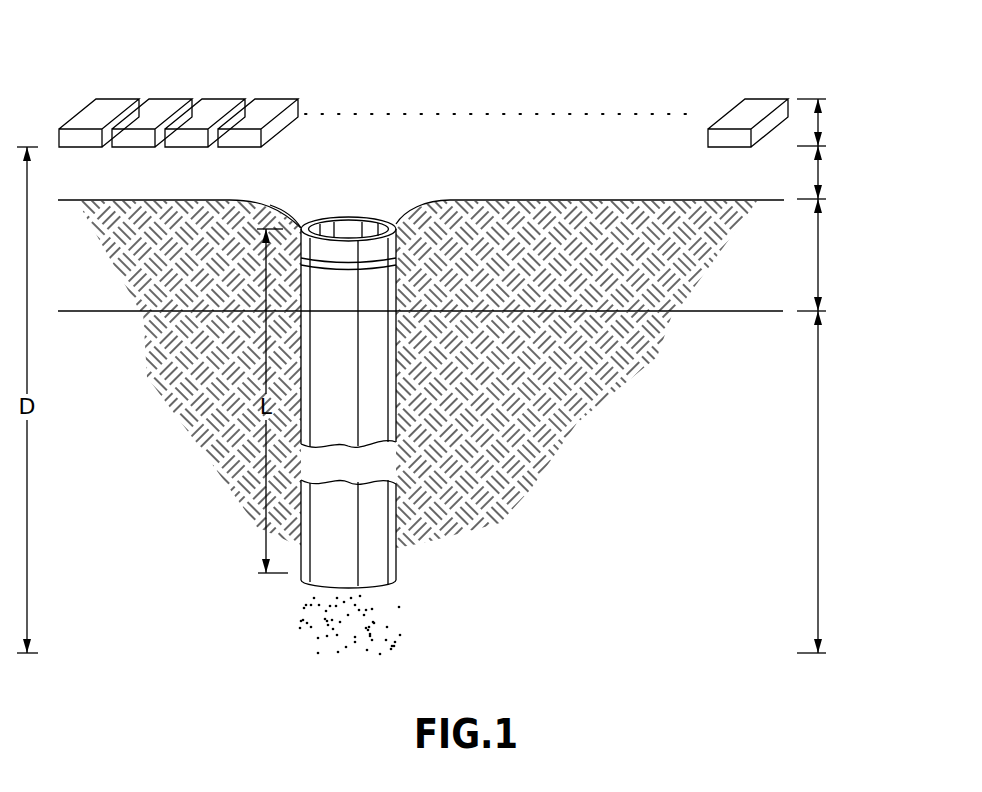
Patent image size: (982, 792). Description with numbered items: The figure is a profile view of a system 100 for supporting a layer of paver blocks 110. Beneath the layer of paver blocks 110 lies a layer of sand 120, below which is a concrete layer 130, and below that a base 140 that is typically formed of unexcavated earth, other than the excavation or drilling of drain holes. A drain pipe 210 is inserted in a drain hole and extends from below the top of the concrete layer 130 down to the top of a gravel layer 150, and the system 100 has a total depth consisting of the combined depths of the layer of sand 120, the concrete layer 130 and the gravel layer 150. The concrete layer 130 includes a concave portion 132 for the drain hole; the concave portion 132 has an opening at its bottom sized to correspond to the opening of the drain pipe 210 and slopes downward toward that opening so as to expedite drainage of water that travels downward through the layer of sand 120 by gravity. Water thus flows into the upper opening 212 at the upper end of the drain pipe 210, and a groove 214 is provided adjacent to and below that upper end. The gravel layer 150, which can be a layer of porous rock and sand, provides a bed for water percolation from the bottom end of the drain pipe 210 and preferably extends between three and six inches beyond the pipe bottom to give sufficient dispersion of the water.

The system for supporting a layer of paver blocks 100 is at (268, 33).
The layer of paver blocks 110 is at (819, 123).
The layer of sand 120 is at (819, 175).
The concrete layer 130 is at (819, 255).
The concave portion 132 is at (300, 224).
The base 140 is at (819, 481).
The gravel layer 150 is at (322, 620).
The drain pipe 210 is at (397, 408).
The upper opening 212 is at (358, 230).
The groove 214 is at (396, 264).